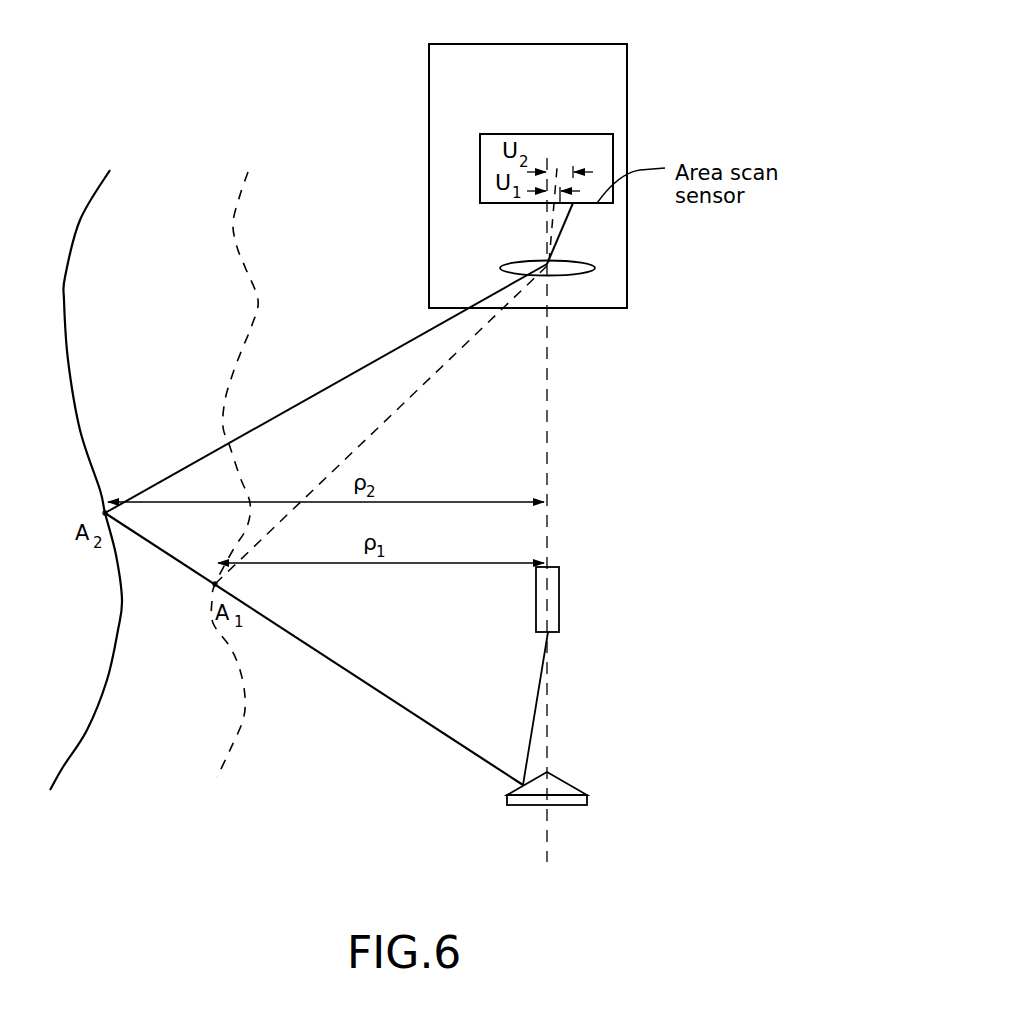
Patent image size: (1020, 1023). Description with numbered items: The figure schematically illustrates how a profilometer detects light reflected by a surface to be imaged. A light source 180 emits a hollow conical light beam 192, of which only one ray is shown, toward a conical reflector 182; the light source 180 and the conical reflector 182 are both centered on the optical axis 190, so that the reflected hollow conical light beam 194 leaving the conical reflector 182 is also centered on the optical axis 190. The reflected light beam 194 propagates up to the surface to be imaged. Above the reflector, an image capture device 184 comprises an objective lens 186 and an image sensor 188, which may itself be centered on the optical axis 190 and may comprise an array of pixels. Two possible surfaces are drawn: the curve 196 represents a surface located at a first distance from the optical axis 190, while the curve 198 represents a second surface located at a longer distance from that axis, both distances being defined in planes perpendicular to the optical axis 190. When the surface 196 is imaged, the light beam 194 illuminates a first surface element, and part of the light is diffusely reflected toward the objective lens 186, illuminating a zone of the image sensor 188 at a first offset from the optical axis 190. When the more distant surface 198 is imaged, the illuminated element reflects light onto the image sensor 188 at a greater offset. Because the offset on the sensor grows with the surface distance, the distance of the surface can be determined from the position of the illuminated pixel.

The light source 180 is at (548, 567).
The conical reflector 182 is at (512, 800).
The image capture device 184 is at (615, 59).
The objective lens 186 is at (595, 268).
The image sensor 188 is at (580, 140).
The optical axis 190 is at (547, 377).
The hollow conical light beam 192 is at (537, 688).
The reflected hollow conical light beam 194 is at (357, 675).
The surface to be imaged 196 is at (233, 222).
The second surface to be imaged 198 is at (65, 277).